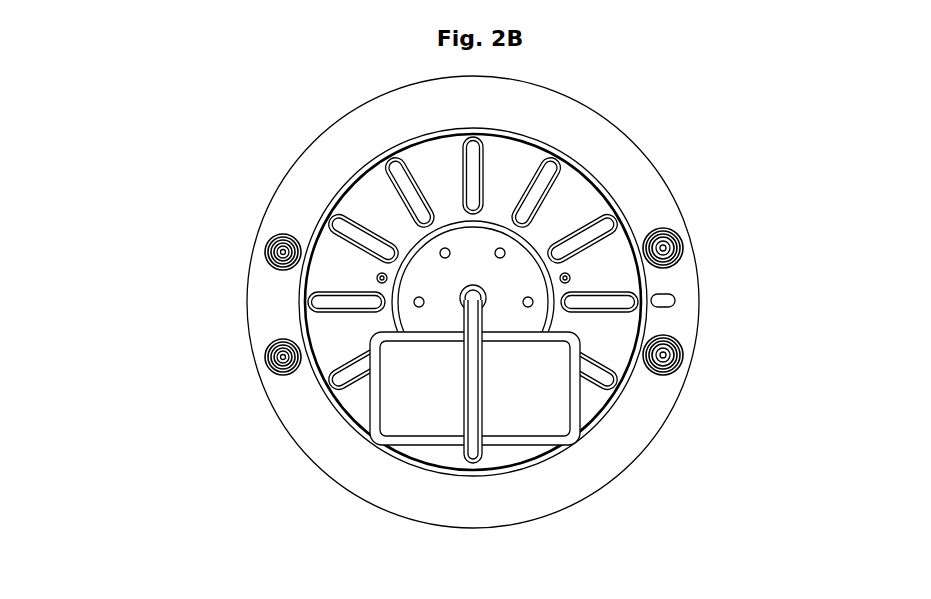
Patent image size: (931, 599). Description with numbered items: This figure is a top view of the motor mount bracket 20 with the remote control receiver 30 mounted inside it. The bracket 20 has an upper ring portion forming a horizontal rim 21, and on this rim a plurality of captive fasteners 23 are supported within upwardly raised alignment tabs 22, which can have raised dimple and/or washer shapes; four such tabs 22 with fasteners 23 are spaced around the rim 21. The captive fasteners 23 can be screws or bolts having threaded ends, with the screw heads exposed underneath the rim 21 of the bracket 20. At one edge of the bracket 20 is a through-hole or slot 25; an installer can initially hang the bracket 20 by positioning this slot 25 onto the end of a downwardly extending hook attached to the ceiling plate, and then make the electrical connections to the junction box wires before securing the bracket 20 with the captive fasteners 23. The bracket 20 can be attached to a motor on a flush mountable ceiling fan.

The motor mount bracket 20 is at (168, 190).
The horizontal rim 21 is at (628, 160).
The alignment tabs 22 is at (266, 247).
The captive fasteners 23 is at (272, 264).
The through-hole (slot) 25 is at (675, 300).
The remote control receiver 30 is at (403, 408).